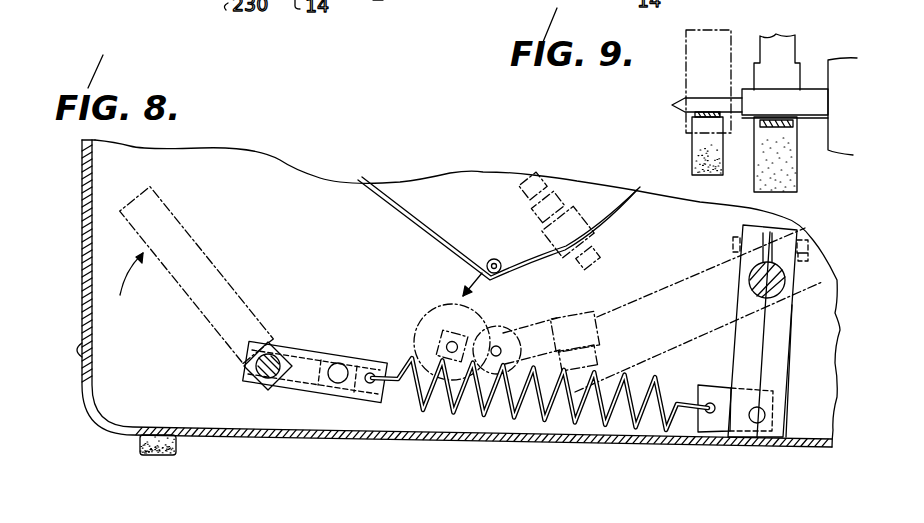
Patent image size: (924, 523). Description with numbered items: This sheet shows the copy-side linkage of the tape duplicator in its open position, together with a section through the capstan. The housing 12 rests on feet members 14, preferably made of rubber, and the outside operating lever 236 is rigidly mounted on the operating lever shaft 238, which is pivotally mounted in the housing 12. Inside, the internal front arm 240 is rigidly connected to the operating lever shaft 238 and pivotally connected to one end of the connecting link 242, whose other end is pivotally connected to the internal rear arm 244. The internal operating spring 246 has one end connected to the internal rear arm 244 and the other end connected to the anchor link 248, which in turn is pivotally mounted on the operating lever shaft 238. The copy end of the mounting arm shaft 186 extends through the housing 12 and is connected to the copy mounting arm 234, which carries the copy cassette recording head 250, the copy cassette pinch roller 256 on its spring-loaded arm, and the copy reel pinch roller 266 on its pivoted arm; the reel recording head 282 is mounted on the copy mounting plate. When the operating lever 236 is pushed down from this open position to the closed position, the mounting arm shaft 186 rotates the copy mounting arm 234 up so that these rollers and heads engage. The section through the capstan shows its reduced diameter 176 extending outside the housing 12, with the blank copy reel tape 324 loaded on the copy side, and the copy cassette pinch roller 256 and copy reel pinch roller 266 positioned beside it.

In FIG. 8, the housing 12 is at (82, 237).
In FIG. 9, the housing 12 is at (826, 150).
In FIG. 8, the feet members 14 is at (155, 458).
In FIG. 8, the reduced diameter 176 is at (500, 260).
In FIG. 9, the reduced diameter 176 is at (688, 100).
In FIG. 8, the mounting arm shaft 186 is at (777, 283).
In FIG. 8, the copy mounting arm 234 is at (698, 277).
In FIG. 8, the operating lever 236 is at (150, 194).
In FIG. 8, the operating lever shaft 238 is at (257, 362).
In FIG. 8, the internal front arm 240 is at (336, 358).
In FIG. 8, the connecting link 242 is at (640, 388).
In FIG. 8, the internal rear arm 244 is at (778, 378).
In FIG. 8, the internal operating spring 246 is at (582, 425).
In FIG. 8, the anchor link 248 is at (299, 378).
In FIG. 8, the copy cassette recording head 250 is at (577, 314).
In FIG. 8, the copy cassette pinch roller 256 is at (500, 338).
In FIG. 9, the copy cassette pinch roller 256 is at (703, 150).
In FIG. 8, the copy reel pinch roller 266 is at (430, 318).
In FIG. 9, the copy reel pinch roller 266 is at (800, 178).
In FIG. 8, the reel recording head 282 is at (543, 230).
In FIG. 8, the blank copy reel tape 324 is at (405, 220).
In FIG. 9, the blank copy reel tape 324 is at (782, 122).